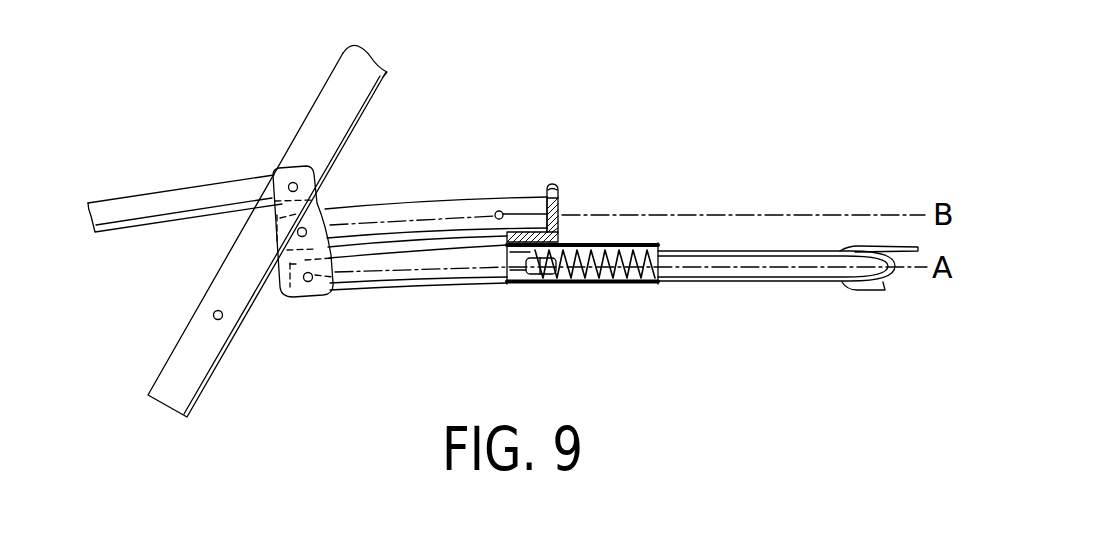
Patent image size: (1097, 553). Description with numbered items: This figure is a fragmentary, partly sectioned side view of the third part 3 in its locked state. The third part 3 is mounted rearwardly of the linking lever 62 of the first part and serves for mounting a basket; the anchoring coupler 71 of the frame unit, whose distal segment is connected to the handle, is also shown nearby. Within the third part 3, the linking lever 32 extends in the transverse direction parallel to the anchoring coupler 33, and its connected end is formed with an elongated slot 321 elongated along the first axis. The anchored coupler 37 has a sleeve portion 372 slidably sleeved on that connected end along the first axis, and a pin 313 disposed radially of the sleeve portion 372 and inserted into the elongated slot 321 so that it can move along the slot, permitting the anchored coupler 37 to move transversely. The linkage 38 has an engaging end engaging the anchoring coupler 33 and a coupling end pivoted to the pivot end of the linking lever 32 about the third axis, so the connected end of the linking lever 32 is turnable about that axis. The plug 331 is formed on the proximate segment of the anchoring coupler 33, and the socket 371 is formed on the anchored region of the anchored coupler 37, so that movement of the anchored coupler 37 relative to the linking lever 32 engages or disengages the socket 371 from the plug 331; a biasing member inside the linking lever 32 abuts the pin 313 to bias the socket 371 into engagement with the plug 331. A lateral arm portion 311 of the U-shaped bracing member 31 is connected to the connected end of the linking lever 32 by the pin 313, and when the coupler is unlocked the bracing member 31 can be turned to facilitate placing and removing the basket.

The third part 3 is at (672, 125).
The U-shaped bracing member 31 is at (872, 247).
The lateral arm portion 311 is at (715, 258).
The pin 313 is at (518, 286).
The linking lever 32 is at (442, 278).
The elongated slot 321 is at (543, 288).
The anchoring coupler 33 is at (465, 211).
The plug 331 is at (556, 199).
The anchored coupler 37 is at (552, 186).
The socket 371 is at (543, 193).
The sleeve portion 372 is at (553, 290).
The linkage 38 is at (283, 294).
The linking lever 62 is at (177, 203).
The anchoring coupler 71 is at (338, 106).